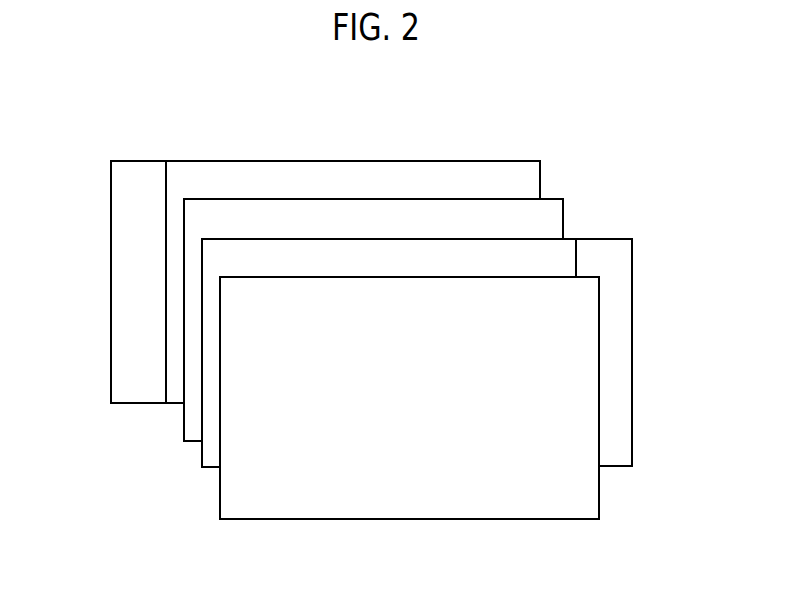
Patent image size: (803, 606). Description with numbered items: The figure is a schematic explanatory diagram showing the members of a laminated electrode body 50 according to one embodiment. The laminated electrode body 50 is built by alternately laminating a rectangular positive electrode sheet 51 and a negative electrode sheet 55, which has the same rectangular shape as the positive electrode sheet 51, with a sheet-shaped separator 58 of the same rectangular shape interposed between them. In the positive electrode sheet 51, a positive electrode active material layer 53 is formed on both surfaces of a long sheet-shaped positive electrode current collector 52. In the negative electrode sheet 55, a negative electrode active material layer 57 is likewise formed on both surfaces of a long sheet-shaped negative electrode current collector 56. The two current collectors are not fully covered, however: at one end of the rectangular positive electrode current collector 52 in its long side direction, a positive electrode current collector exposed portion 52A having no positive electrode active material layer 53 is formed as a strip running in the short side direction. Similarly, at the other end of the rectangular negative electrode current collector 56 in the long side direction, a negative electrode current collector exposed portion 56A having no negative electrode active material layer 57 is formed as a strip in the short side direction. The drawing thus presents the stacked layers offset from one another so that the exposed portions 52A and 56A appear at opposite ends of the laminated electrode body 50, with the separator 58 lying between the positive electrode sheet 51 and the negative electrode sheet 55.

The laminated electrode body 50 is at (711, 104).
The positive electrode sheet 51 is at (620, 238).
The positive electrode current collector 52 is at (632, 352).
The positive electrode current collector exposed portion 52A is at (622, 427).
The positive electrode active material layer 53 is at (203, 454).
The negative electrode sheet 55 is at (471, 159).
The negative electrode current collector 56 is at (141, 160).
The negative electrode current collector exposed portion 56A is at (118, 233).
The negative electrode active material layer 57 is at (292, 170).
The separator 58 is at (556, 198).